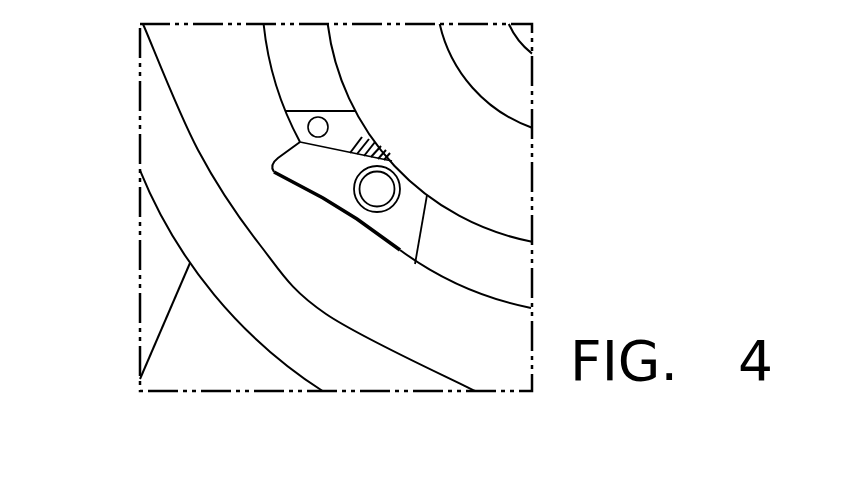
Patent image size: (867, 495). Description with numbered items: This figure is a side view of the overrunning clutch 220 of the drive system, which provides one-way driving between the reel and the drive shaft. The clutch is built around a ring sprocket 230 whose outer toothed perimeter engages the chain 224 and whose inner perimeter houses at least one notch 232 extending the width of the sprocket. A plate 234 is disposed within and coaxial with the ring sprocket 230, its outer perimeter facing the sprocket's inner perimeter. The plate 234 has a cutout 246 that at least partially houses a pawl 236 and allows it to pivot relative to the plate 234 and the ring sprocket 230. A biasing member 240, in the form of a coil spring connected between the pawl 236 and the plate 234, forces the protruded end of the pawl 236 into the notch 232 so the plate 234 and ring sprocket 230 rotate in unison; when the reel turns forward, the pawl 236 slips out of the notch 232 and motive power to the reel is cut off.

The overrunning clutch 220 is at (138, 242).
The chain 224 is at (278, 358).
The ring sprocket 230 is at (178, 121).
The notch 232 is at (337, 188).
The plate 234 is at (488, 166).
The pawl 236 is at (296, 171).
The biasing member 240 is at (344, 125).
The cutout 246 is at (404, 225).